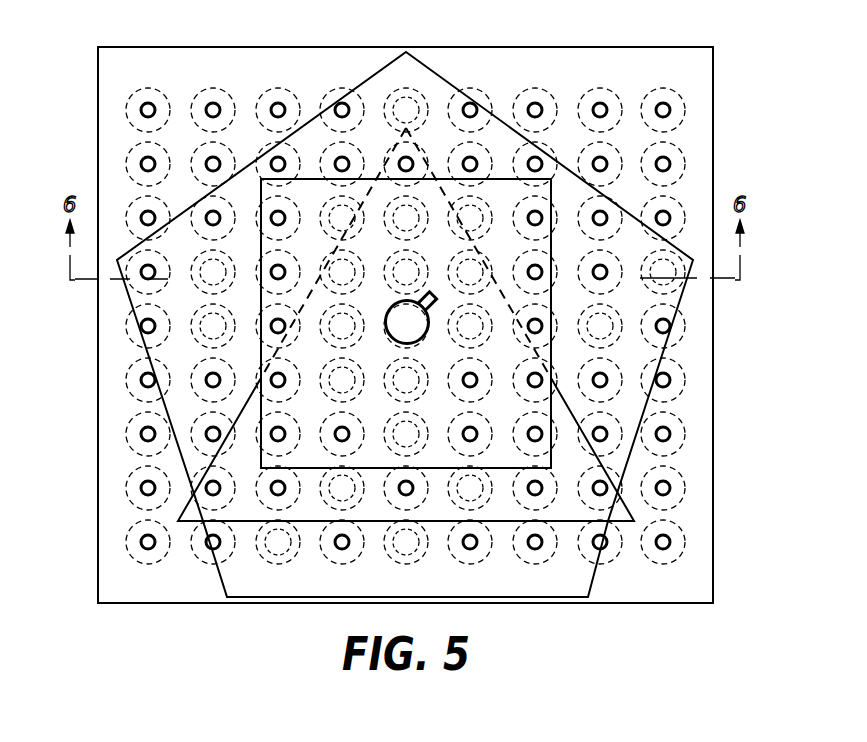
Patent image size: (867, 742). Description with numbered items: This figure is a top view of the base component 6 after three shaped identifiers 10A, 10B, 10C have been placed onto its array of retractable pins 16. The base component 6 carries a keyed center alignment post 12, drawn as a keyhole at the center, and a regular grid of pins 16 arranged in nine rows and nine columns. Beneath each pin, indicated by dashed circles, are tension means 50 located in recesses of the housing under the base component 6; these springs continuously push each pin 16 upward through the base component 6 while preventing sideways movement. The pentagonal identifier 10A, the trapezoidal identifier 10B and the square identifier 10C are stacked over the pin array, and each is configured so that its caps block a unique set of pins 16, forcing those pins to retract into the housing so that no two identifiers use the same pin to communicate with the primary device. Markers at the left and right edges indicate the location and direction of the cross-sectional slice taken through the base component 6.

The base component 6 is at (713, 78).
The retractable pins 16 is at (212, 106).
The tension means 50 is at (213, 87).
The shaped identifier 10A is at (432, 70).
The shaped identifier 10B is at (630, 508).
The shaped identifier 10C is at (498, 179).
The keyed center alignment post 12 is at (392, 333).